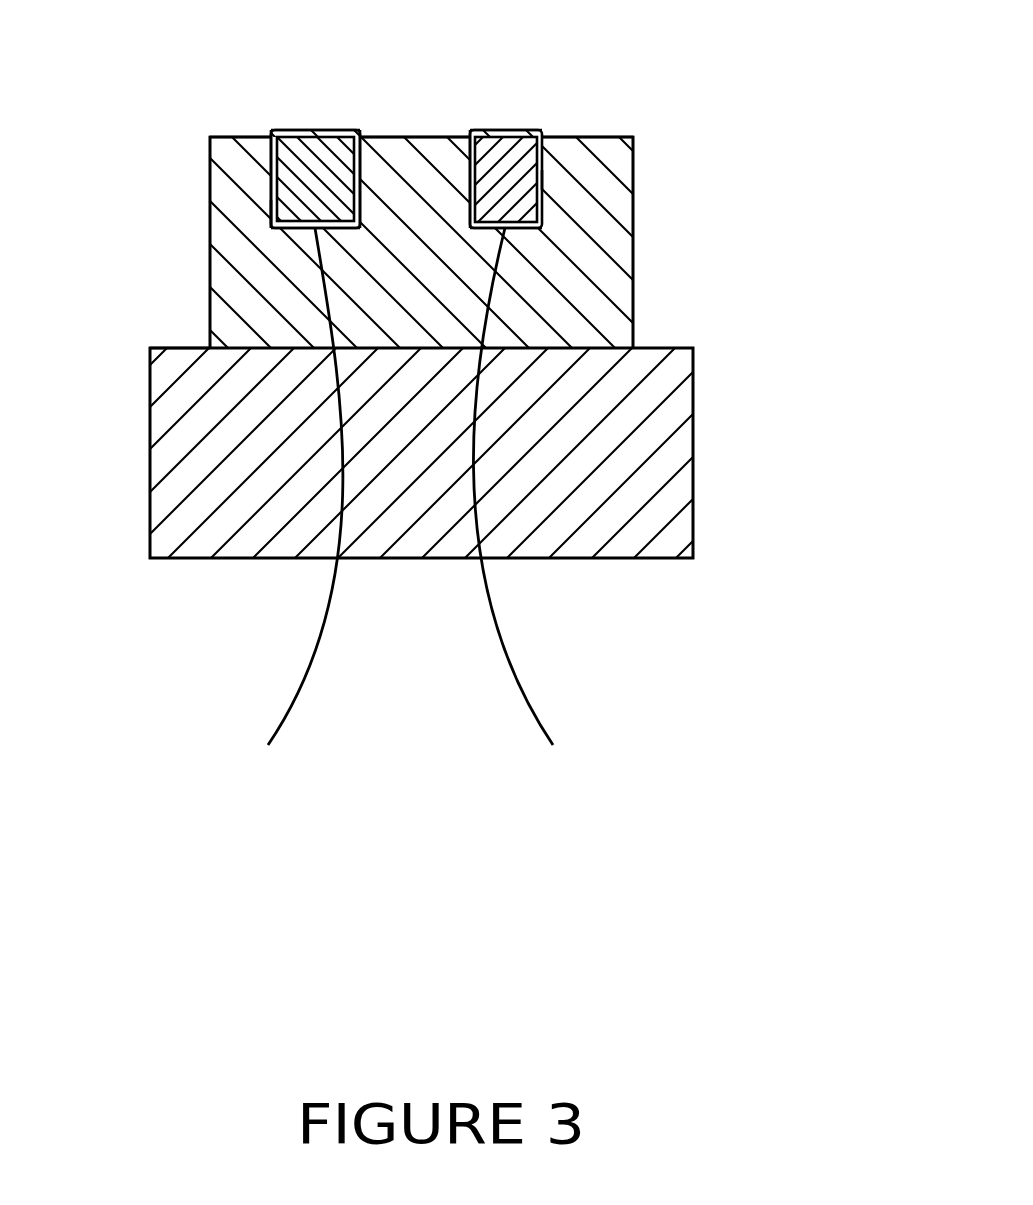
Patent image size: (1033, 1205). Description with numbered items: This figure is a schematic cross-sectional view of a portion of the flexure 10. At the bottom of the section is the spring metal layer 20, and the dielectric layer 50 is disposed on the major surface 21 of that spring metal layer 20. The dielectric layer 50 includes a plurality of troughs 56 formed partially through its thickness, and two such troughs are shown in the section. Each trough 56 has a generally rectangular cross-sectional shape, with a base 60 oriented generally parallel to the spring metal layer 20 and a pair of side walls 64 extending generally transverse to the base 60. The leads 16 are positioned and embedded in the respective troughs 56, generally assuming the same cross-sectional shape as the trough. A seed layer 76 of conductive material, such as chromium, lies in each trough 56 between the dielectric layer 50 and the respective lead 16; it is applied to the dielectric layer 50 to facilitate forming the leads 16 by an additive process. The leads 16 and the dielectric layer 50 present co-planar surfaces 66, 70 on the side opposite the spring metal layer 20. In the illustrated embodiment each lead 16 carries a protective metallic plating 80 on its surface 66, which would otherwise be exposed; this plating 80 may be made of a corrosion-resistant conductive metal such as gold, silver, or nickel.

The flexure 10 is at (206, 630).
The leads 16 is at (316, 157).
The spring metal layer 20 is at (658, 471).
The major surface 21 is at (187, 348).
The dielectric layer 50 is at (636, 235).
The troughs 56 is at (266, 212).
The base 60 is at (414, 510).
The side walls 64 is at (471, 185).
The surface 66 is at (341, 130).
The surface 70 is at (607, 137).
The seed layer 76 is at (272, 170).
The protective metallic plating 80 is at (284, 131).